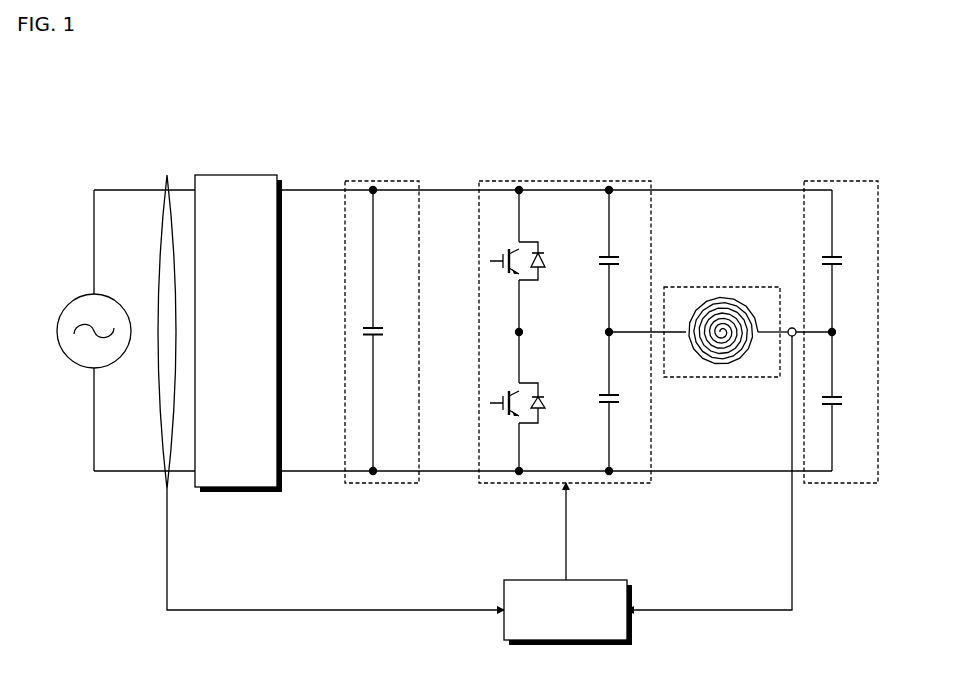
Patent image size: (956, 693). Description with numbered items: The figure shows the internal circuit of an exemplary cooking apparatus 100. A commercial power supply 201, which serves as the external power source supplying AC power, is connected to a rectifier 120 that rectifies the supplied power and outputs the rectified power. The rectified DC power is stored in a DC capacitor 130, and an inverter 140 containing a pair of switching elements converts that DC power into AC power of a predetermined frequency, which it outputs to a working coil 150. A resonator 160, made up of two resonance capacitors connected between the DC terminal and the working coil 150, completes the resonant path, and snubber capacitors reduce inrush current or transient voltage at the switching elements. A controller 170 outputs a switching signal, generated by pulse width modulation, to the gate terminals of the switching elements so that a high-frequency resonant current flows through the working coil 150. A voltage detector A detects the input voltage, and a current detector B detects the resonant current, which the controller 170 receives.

The cooking apparatus 100 is at (144, 96).
The commercial power supply 201 is at (68, 296).
The rectifier 120 is at (256, 175).
The DC capacitor 130 is at (403, 181).
The inverter 140 is at (628, 181).
The working coil 150 is at (753, 287).
The resonator 160 is at (858, 181).
The controller 170 is at (606, 580).